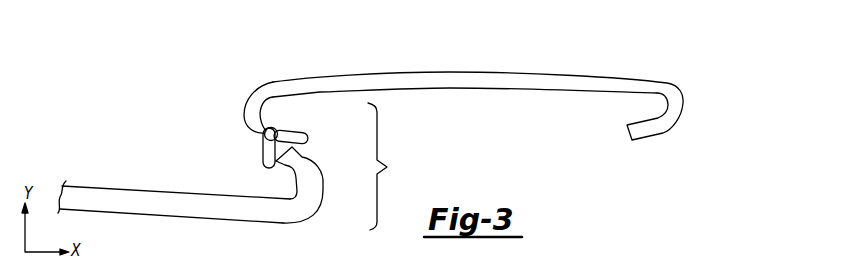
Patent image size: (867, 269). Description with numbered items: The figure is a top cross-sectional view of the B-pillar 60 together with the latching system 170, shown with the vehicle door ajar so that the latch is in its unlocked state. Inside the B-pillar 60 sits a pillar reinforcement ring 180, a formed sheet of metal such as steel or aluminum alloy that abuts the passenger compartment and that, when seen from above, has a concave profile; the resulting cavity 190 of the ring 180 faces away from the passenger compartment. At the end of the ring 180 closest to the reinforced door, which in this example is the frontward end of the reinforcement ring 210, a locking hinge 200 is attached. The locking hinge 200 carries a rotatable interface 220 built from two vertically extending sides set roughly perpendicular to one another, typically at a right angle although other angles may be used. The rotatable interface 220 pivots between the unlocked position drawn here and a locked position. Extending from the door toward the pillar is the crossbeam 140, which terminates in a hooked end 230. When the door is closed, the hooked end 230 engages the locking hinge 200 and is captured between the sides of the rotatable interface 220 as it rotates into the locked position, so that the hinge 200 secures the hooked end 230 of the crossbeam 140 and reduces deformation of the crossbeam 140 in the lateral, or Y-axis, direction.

The B-pillar 60 is at (706, 76).
The crossbeam 140 is at (129, 201).
The latching system 170 is at (394, 166).
The pillar reinforcement ring 180 is at (540, 73).
The cavity 190 is at (558, 105).
The locking hinge 200 is at (262, 137).
The frontward end of the reinforcement ring 210 is at (375, 67).
The rotatable interface 220 is at (297, 132).
The hooked end 230 is at (302, 158).